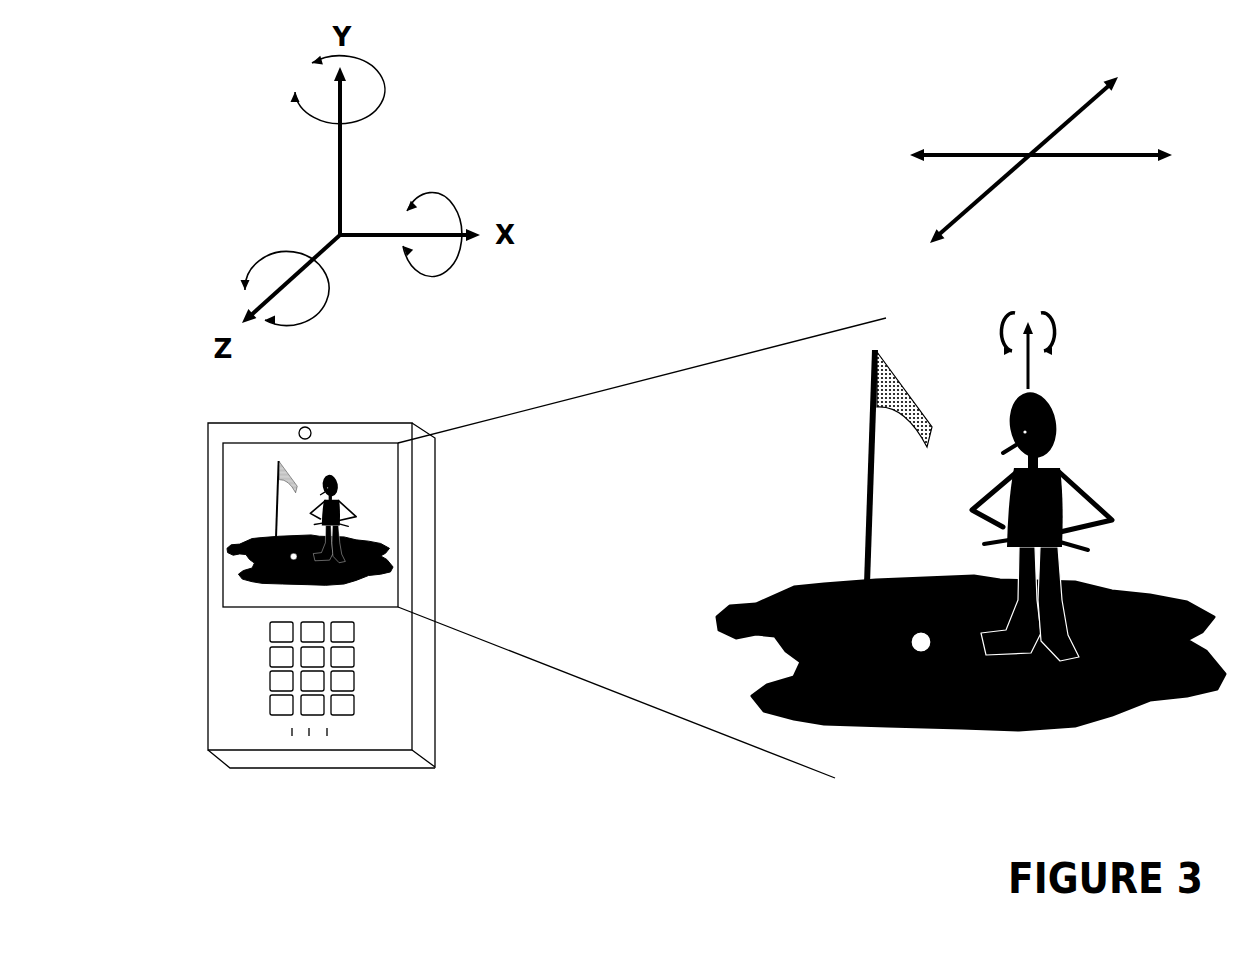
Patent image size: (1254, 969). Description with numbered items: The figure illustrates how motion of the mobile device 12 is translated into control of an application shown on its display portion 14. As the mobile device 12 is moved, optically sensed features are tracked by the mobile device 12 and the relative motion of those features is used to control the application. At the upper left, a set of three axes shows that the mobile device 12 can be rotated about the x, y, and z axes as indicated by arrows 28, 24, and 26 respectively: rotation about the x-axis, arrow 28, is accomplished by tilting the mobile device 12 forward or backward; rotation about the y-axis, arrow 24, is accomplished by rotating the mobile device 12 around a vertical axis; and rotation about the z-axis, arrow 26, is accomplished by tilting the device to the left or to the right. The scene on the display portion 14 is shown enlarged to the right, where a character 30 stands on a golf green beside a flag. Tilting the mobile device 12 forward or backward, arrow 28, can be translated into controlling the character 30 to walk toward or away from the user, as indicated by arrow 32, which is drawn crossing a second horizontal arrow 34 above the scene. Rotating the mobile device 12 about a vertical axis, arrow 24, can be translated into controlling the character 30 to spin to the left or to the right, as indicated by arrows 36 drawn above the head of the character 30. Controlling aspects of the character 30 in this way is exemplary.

The mobile device 12 is at (207, 587).
The display portion 14 is at (225, 523).
The arrow 24 is at (384, 88).
The arrow 26 is at (258, 257).
The arrow 28 is at (440, 200).
The character 30 is at (1075, 475).
The arrow 32 is at (1075, 112).
The horizontal axis 34 is at (962, 152).
The arrows 36 is at (1062, 322).